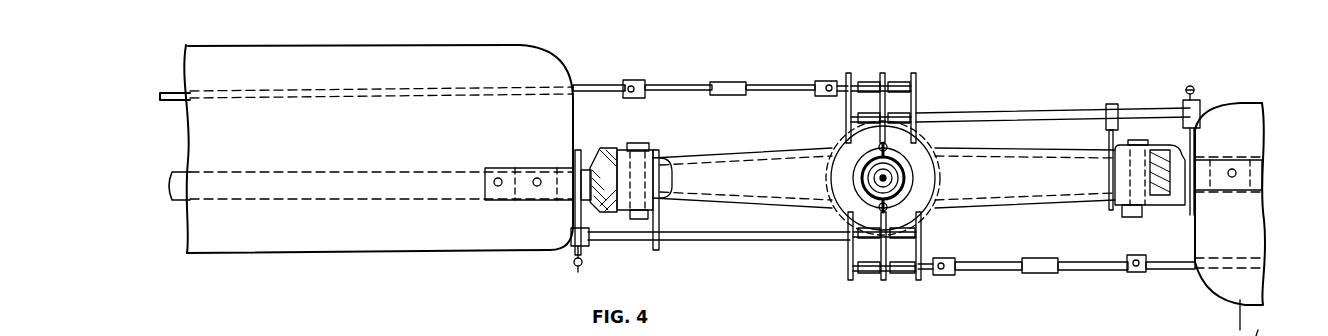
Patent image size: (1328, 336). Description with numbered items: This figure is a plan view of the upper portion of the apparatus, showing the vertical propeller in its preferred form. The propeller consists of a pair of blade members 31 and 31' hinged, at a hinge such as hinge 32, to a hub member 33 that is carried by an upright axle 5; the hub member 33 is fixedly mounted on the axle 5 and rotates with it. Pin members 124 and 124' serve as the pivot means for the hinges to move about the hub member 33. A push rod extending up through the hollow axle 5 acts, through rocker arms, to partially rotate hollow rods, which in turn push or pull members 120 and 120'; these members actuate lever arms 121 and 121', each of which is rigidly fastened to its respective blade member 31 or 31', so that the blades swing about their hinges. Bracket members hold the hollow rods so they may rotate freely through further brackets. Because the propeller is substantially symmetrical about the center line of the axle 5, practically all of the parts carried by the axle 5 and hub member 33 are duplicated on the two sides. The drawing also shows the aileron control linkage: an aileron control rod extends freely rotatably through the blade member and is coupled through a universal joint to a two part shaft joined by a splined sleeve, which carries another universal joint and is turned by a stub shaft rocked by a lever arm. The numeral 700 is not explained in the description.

The blade member 31 is at (366, 163).
The blade member 31' is at (1211, 219).
The hinge 32 is at (598, 150).
The hub member 33 is at (720, 157).
The upright axle 5 is at (896, 176).
The member 120 is at (548, 279).
The member 120' is at (1209, 77).
The lever arm 121 is at (550, 251).
The lever arm 121' is at (1223, 142).
The pin member 124 is at (638, 163).
The pin member 124' is at (1150, 131).
The assembly 700 is at (878, 334).